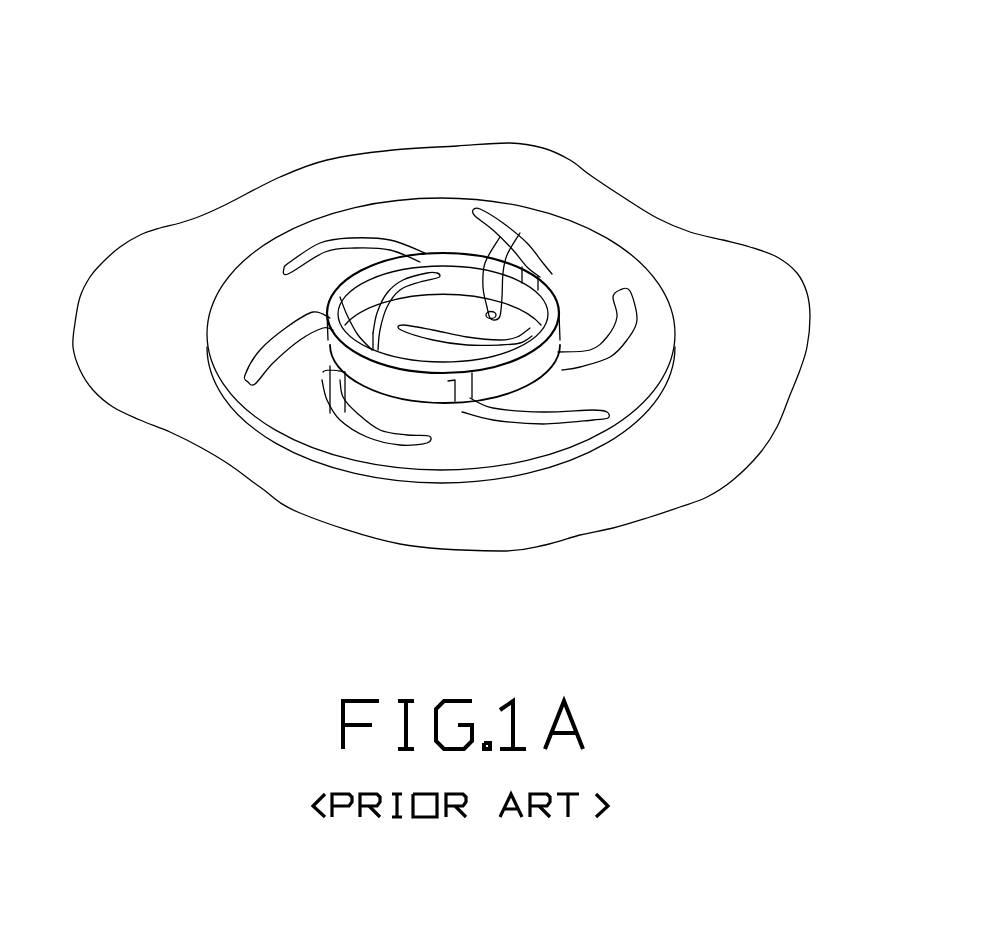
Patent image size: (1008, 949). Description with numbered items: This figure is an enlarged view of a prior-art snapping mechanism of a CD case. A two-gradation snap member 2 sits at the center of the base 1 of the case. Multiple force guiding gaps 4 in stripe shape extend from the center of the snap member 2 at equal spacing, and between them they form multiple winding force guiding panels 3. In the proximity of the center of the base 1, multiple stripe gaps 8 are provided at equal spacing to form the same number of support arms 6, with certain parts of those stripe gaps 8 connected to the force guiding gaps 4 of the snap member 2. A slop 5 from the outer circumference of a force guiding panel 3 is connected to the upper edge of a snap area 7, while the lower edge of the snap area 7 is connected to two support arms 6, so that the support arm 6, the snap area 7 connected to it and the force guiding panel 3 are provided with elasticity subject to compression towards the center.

The base 1 is at (619, 218).
The snap member 2 is at (446, 303).
The force guiding panel 3 is at (521, 313).
The force guiding gap 4 is at (498, 289).
The slop 5 is at (536, 347).
The support arm 6 is at (369, 405).
The snap area 7 is at (431, 393).
The stripe gap 8 is at (547, 412).